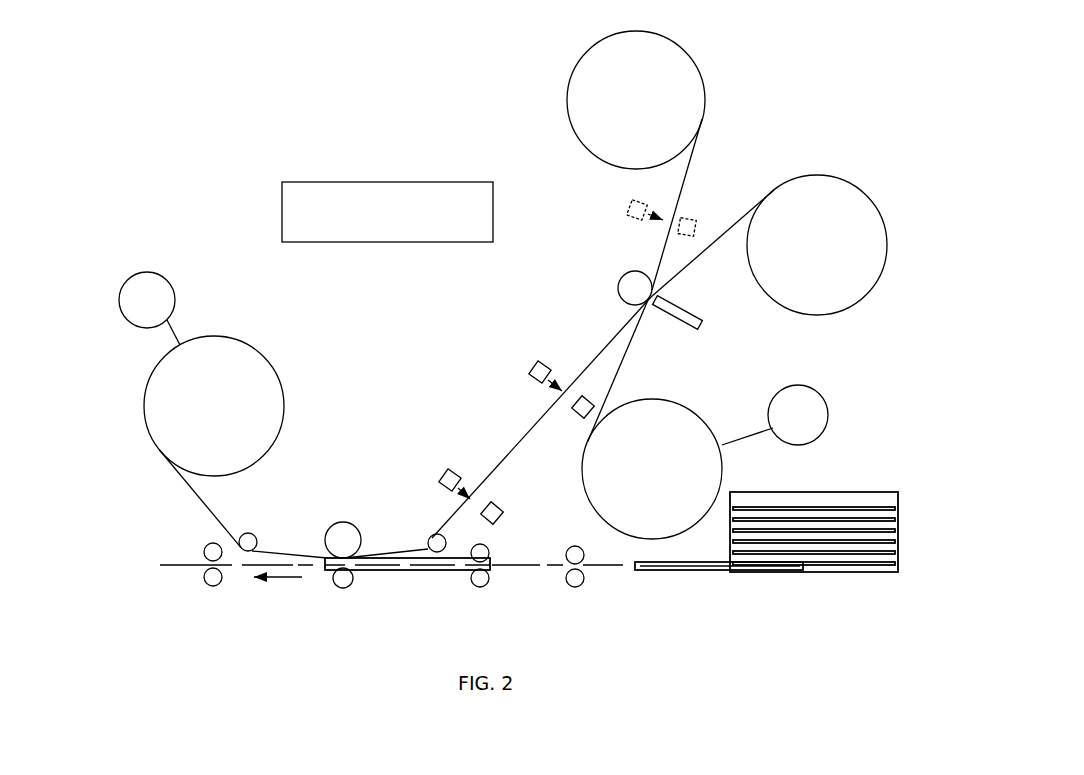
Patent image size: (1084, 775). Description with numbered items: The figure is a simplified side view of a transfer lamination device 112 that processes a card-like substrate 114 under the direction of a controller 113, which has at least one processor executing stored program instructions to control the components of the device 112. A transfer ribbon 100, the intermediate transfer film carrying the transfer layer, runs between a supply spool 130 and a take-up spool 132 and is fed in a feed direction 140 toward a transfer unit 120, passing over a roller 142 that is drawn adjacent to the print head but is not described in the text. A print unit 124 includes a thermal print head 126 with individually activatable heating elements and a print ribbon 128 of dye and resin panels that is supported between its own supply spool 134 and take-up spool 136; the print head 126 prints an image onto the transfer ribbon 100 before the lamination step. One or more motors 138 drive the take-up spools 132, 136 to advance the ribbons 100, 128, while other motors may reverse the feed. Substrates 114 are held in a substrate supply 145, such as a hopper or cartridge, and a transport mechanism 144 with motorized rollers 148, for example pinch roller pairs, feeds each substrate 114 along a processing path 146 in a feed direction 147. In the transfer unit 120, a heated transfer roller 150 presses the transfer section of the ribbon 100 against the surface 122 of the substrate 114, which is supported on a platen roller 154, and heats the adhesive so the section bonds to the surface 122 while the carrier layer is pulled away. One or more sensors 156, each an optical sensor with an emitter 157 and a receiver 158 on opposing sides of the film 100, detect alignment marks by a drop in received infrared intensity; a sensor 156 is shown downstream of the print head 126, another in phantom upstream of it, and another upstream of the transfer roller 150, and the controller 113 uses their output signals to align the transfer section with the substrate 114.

The transfer ribbon 100 is at (528, 438).
The transfer lamination device 112 is at (262, 105).
The controller 113 is at (315, 182).
The substrate 114 is at (398, 572).
The transfer unit 120 is at (170, 517).
The surface 122 is at (460, 552).
The print unit 124 is at (834, 357).
The thermal print head 126 is at (687, 327).
The print ribbon 128 is at (693, 260).
The supply spool 130 is at (576, 84).
The take-up spool 132 is at (247, 368).
The supply spool 134 is at (870, 278).
The take-up spool 136 is at (677, 413).
The motor 138 is at (130, 283).
The feed direction 140 is at (608, 372).
The roller 142 is at (627, 283).
The transport mechanism 144 is at (614, 598).
The substrate supply 145 is at (855, 492).
The processing path 146 is at (170, 567).
The feed direction 147 is at (278, 580).
The motorized rollers 148 is at (213, 587).
The heated transfer roller 150 is at (343, 524).
The platen roller 154 is at (343, 588).
The sensor 156 is at (608, 193).
The emitter 157 is at (630, 213).
The receiver 158 is at (690, 215).